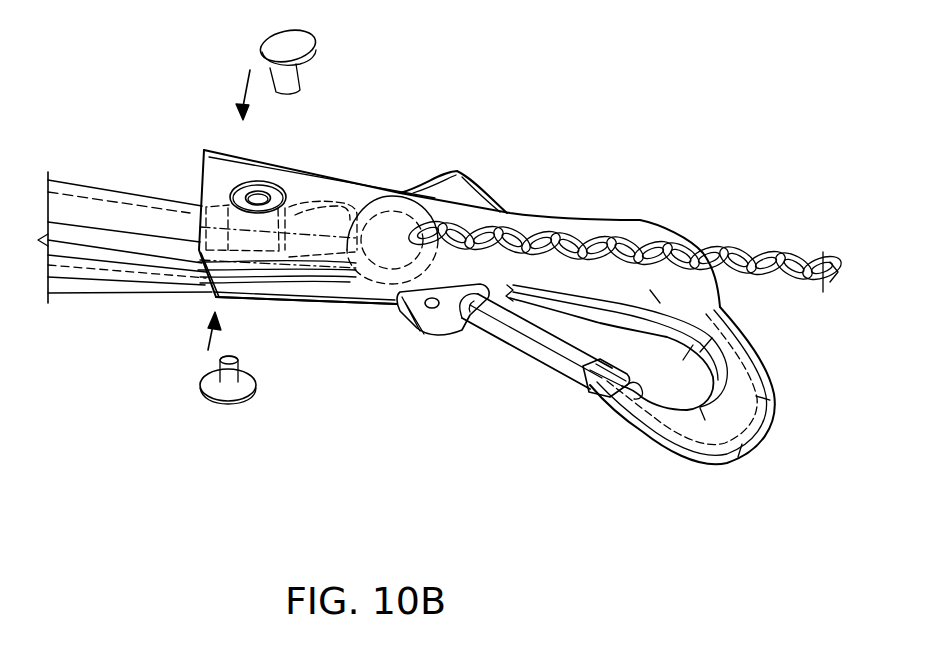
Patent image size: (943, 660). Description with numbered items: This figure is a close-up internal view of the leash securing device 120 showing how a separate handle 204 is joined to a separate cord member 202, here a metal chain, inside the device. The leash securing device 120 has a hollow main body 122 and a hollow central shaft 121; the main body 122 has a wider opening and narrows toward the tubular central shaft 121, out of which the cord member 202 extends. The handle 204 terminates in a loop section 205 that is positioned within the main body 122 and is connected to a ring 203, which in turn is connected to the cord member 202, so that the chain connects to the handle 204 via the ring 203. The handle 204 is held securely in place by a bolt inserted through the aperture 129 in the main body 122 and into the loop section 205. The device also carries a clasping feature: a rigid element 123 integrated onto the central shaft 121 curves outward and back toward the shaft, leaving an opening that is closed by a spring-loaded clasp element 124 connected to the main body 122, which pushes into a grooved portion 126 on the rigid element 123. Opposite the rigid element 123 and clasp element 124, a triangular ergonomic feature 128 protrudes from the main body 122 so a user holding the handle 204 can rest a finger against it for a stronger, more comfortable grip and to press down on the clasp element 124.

The leash securing device 120 is at (443, 104).
The central shaft 121 is at (607, 215).
The main body 122 is at (300, 304).
The rigid element 123 is at (751, 456).
The clasp element 124 is at (521, 366).
The grooved portion 126 is at (606, 410).
The ergonomic feature 128 is at (487, 190).
The aperture 129 is at (237, 170).
The cord member 202 is at (717, 247).
The ring 203 is at (383, 218).
The handle 204 is at (112, 186).
The loop section 205 is at (306, 223).